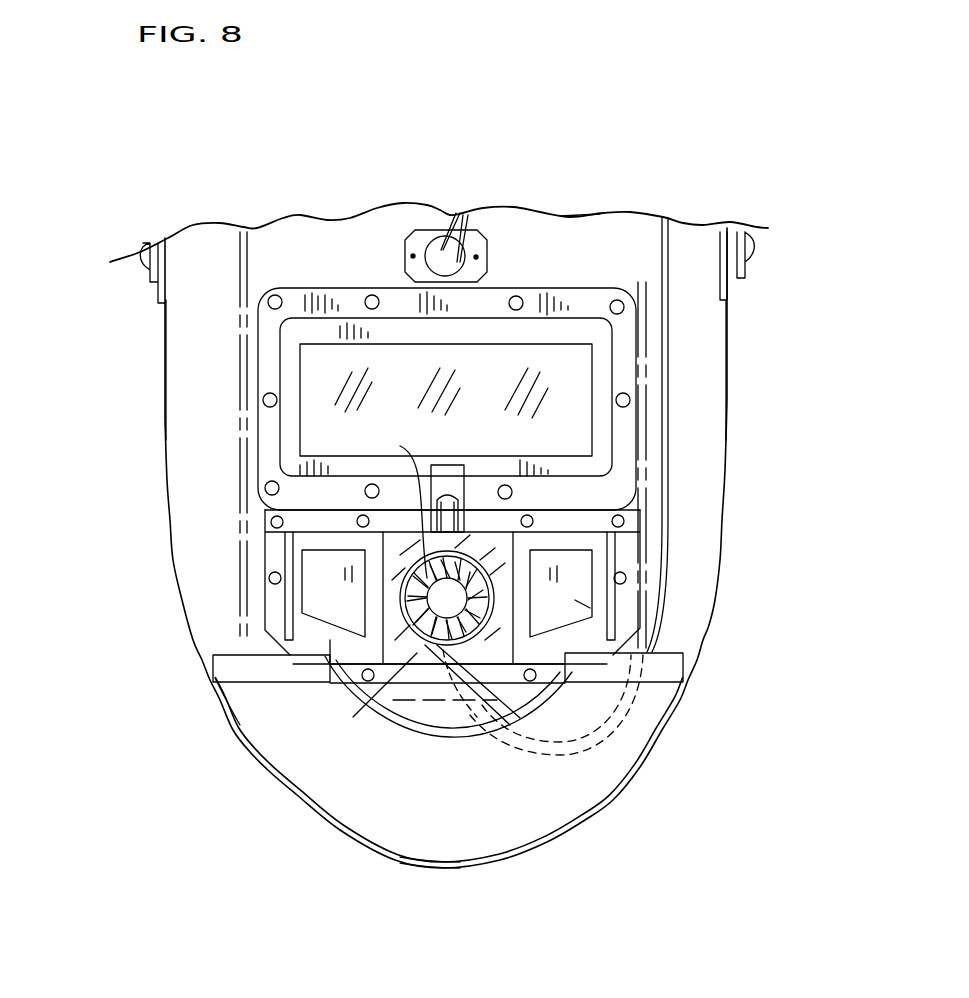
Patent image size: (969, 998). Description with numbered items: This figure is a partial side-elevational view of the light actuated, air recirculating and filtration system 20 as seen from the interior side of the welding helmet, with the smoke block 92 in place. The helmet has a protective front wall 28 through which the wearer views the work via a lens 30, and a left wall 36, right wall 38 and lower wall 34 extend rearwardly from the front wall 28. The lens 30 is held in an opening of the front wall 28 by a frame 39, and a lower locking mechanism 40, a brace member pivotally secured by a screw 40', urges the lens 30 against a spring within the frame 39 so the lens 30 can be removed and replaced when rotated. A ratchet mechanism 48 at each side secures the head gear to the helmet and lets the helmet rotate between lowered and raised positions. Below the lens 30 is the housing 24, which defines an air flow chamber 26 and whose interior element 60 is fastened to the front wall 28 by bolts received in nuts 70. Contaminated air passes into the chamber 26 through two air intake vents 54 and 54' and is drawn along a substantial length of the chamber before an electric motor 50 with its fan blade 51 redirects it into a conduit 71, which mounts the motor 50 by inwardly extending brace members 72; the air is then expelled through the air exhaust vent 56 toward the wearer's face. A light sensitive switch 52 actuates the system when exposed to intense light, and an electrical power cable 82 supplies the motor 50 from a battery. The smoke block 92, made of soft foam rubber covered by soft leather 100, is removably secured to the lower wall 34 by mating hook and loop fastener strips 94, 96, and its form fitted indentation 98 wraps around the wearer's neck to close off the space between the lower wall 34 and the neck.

The light actuated, air recirculating and filtration system 20 is at (105, 458).
The housing 24 is at (608, 545).
The air flow chamber 26 is at (598, 610).
The protective front wall 28 is at (545, 226).
The lens 30 is at (510, 382).
The lower wall 34 is at (356, 852).
The left wall 36 is at (188, 342).
The right wall 38 is at (700, 350).
The frame 39 is at (578, 330).
The lower locking mechanism 40 is at (457, 462).
The screw 40' is at (464, 481).
The ratchet mechanism 48 is at (142, 250).
The electric motor 50 is at (470, 603).
The fan blade 51 is at (398, 506).
The light sensitive switch 52 is at (445, 232).
The air intake vent 54 is at (246, 593).
The air intake vent 54' is at (647, 593).
The air exhaust vent 56 is at (430, 602).
The interior element 60 is at (545, 663).
The nuts 70 is at (622, 516).
The conduit 71 is at (378, 708).
The brace members 72 is at (410, 580).
The electrical power cable 82 is at (470, 214).
The smoke block 92 is at (546, 815).
The hook and loop fastener strip 94 is at (442, 862).
The hook and loop fastener strip 96 is at (430, 859).
The form fitted indentation 98 is at (408, 717).
The soft leather 100 is at (622, 748).